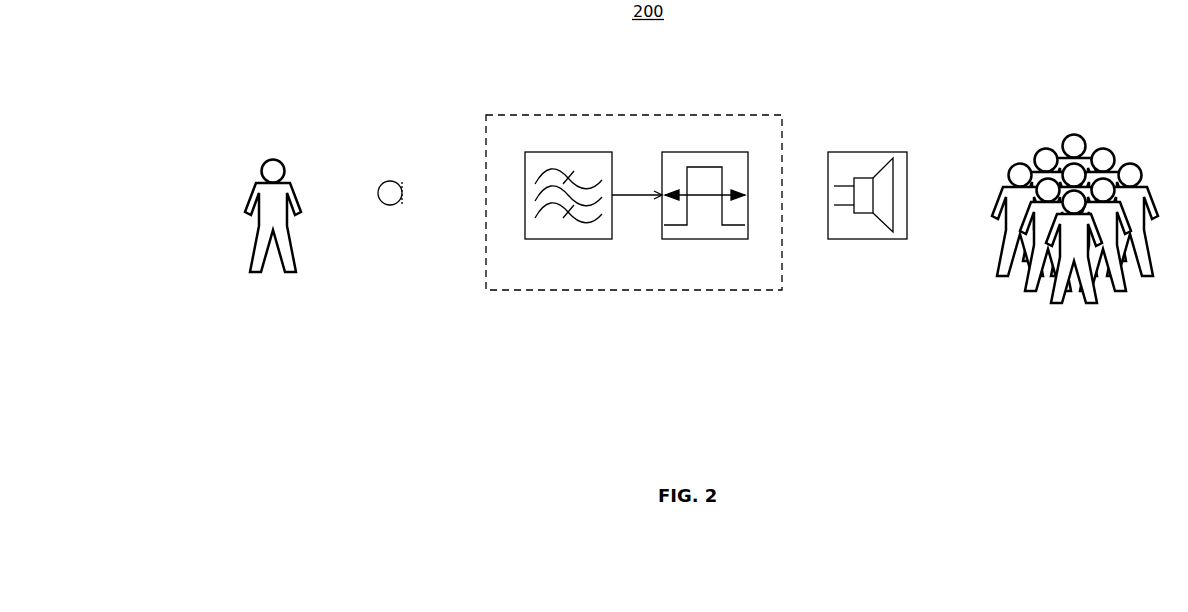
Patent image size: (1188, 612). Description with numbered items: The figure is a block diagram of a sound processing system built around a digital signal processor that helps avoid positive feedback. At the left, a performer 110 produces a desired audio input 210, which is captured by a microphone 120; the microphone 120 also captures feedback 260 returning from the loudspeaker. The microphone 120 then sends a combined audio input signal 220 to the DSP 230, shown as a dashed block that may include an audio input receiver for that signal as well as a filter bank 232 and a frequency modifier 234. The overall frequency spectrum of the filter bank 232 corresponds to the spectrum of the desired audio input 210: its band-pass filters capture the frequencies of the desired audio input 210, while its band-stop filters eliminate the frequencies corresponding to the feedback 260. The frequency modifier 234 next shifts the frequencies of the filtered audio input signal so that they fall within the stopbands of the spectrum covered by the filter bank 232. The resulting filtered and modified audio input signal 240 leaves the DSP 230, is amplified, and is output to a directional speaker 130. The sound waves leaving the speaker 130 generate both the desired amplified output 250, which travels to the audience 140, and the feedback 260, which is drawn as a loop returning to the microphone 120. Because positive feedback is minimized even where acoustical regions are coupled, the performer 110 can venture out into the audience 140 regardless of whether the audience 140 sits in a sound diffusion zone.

The performer 110 is at (290, 273).
The microphone 120 is at (392, 206).
The directional speaker 130 is at (868, 240).
The audience 140 is at (1076, 302).
The desired audio input 210 is at (364, 193).
The combined audio input signal 220 is at (525, 194).
The DSP 230 is at (634, 202).
The filter bank 232 is at (570, 240).
The frequency modifier 234 is at (708, 240).
The processed signal 240 is at (828, 195).
The desired amplified output 250 is at (993, 195).
The feedback 260 is at (383, 171).